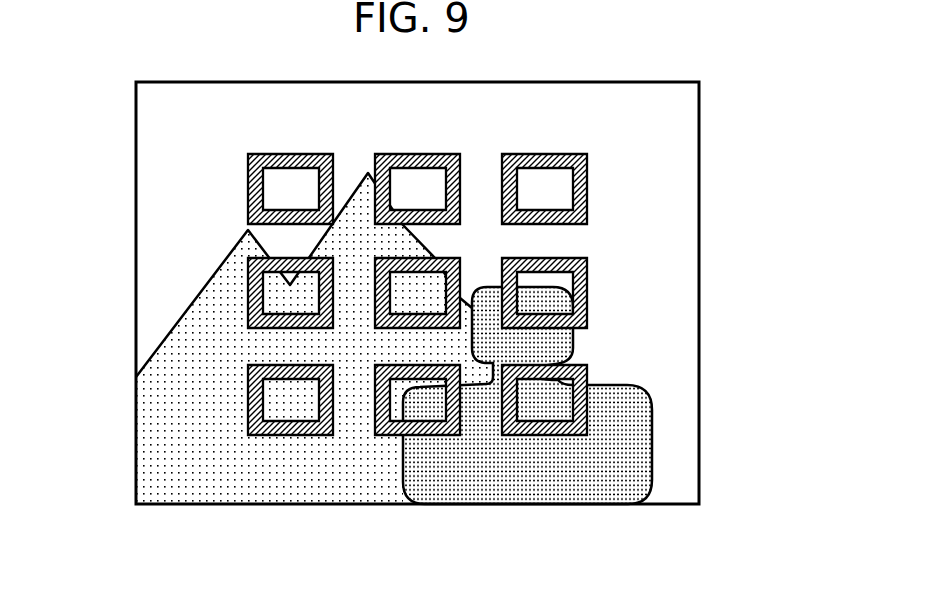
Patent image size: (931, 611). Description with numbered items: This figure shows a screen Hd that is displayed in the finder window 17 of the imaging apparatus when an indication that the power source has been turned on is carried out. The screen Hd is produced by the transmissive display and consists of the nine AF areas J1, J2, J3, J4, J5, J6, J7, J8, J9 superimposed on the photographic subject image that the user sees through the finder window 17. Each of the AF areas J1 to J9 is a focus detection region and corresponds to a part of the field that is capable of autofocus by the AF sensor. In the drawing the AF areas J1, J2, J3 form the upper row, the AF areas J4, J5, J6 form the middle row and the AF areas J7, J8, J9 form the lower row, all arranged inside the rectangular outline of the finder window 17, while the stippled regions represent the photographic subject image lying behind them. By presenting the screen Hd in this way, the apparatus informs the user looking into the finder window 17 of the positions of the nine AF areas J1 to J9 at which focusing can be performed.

The finder window 17 is at (421, 293).
The screen Hd is at (118, 114).
The AF area J1 is at (296, 154).
The AF area J2 is at (423, 154).
The AF area J3 is at (547, 154).
The AF area J4 is at (247, 283).
The AF area J5 is at (448, 258).
The AF area J6 is at (587, 270).
The AF area J7 is at (293, 436).
The AF area J8 is at (389, 436).
The AF area J9 is at (587, 372).